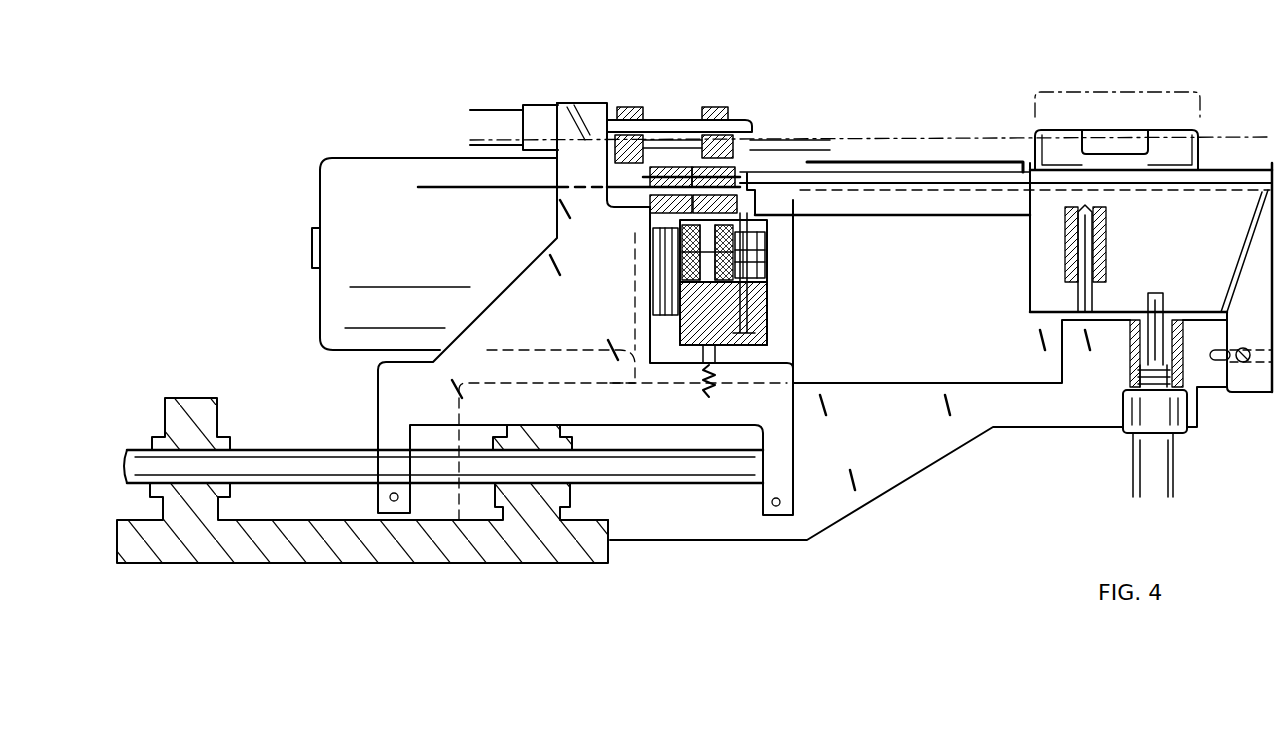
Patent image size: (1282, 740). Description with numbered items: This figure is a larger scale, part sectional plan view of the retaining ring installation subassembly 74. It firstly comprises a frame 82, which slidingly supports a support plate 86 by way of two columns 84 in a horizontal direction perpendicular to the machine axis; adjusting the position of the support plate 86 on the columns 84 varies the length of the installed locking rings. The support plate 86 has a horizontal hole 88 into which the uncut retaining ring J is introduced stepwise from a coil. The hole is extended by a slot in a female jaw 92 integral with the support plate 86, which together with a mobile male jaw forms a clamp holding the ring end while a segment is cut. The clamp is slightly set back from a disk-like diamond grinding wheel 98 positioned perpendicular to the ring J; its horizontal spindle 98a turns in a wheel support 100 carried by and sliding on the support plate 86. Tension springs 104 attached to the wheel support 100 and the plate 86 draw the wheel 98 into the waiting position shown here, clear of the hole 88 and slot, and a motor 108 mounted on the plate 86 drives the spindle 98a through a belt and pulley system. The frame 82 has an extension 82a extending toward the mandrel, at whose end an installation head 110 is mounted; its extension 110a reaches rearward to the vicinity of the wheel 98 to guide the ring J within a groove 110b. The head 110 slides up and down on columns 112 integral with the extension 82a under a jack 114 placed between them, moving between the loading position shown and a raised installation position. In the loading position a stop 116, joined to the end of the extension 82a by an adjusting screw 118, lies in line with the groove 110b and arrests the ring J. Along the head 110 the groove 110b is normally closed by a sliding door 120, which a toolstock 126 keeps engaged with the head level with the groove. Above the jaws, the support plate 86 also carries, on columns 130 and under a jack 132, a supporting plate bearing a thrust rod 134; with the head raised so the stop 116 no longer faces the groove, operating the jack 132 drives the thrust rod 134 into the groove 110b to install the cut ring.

The retaining ring installation subassembly 74 is at (893, 523).
The frame 82 is at (567, 548).
The frame extension 82a is at (1028, 410).
The columns 84 is at (262, 468).
The support plate 86 is at (403, 390).
The horizontal hole 88 is at (640, 213).
The female jaw 92 is at (777, 148).
The diamond grinding wheel 98 is at (762, 207).
The wheel spindle 98a is at (768, 255).
The wheel support 100 is at (770, 318).
The tension springs 104 is at (723, 395).
The motor 108 is at (340, 178).
The installation head 110 is at (1140, 205).
The head extension 110a is at (878, 200).
The groove 110b is at (990, 190).
The columns 112 is at (1073, 287).
The jack 114 is at (1147, 478).
The stop 116 is at (1232, 300).
The screw 118 is at (1243, 362).
The door 120 is at (1232, 180).
The toolstock 126 is at (1057, 153).
The columns 130 is at (660, 125).
The jack 132 is at (497, 118).
The thrust rod 134 is at (692, 128).
The retaining ring J is at (443, 187).